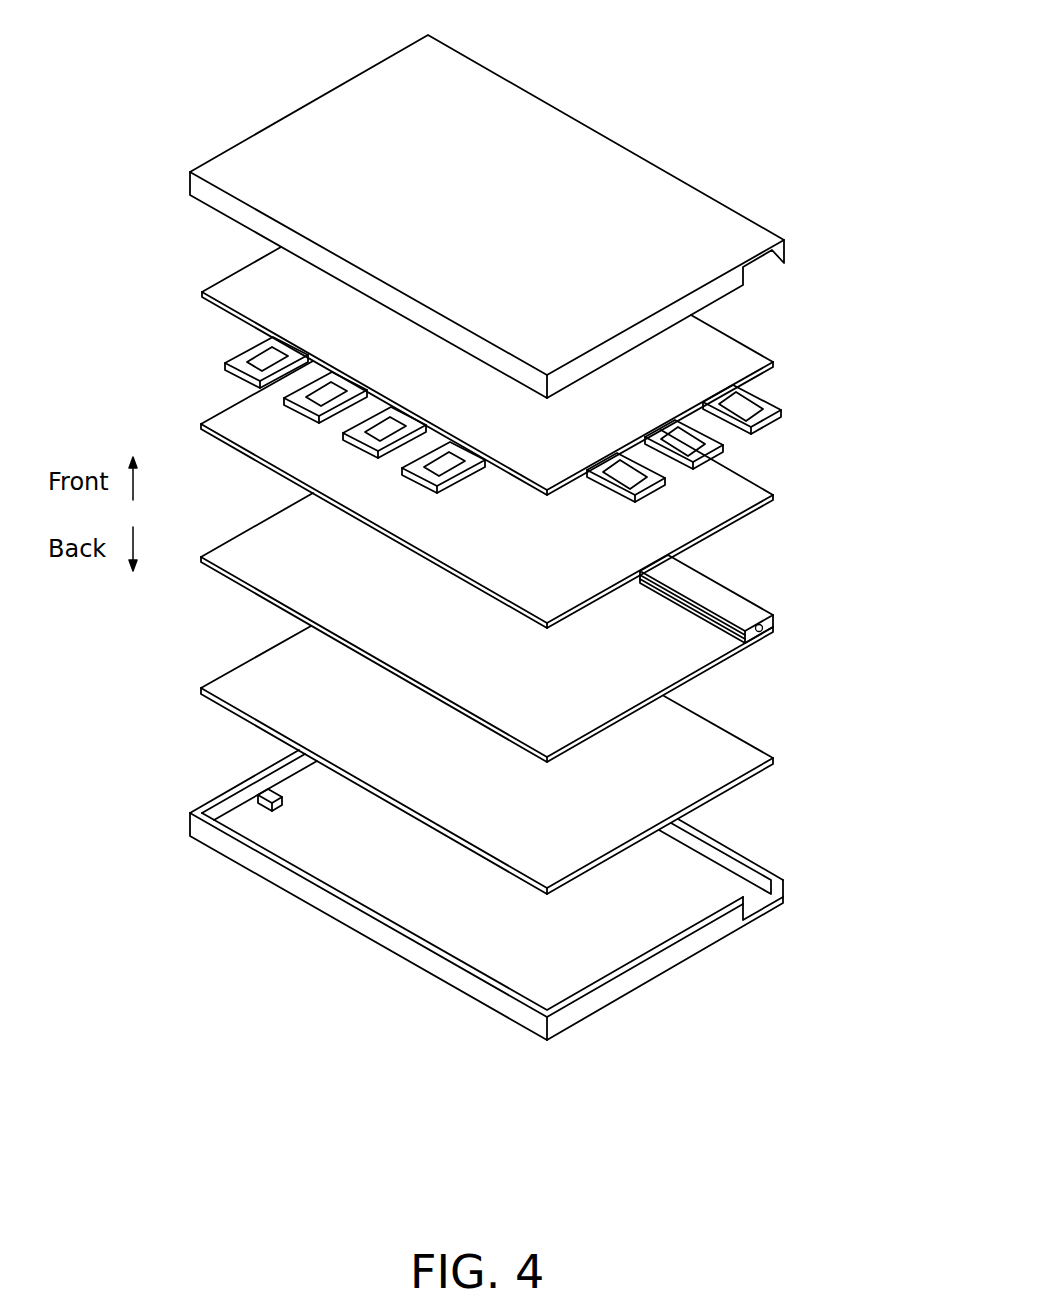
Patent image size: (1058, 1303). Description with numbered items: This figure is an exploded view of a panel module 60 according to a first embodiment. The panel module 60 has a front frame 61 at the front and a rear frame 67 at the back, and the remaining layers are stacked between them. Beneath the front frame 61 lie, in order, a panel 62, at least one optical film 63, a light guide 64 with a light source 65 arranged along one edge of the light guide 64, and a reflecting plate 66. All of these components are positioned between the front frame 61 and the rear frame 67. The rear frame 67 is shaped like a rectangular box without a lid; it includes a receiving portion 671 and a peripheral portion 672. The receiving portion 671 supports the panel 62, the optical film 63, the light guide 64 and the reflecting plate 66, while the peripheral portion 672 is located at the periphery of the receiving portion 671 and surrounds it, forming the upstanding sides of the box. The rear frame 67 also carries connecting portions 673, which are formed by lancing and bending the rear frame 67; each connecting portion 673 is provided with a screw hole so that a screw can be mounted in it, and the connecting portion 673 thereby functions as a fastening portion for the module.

The panel module 60 is at (781, 21).
The front frame 61 is at (700, 218).
The panel 62 is at (723, 350).
The optical film 63 is at (723, 482).
The light guide 64 is at (527, 627).
The light source 65 is at (774, 634).
The reflecting plate 66 is at (723, 750).
The rear frame 67 is at (472, 956).
The receiving portion 671 is at (492, 958).
The peripheral portion 672 is at (612, 987).
The connecting portion 673 is at (267, 797).